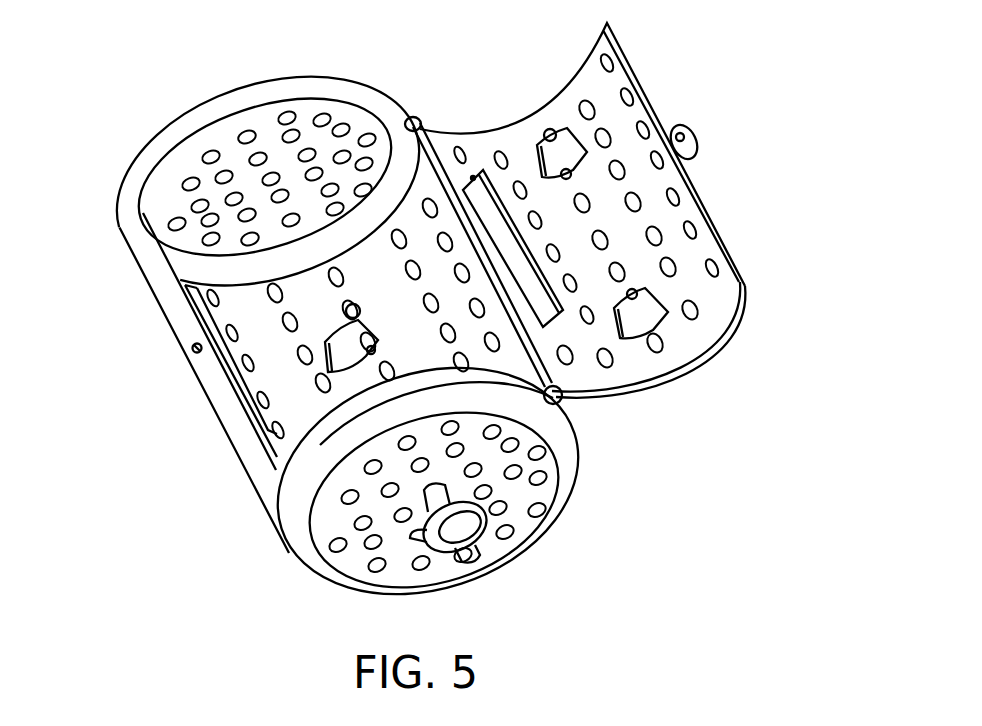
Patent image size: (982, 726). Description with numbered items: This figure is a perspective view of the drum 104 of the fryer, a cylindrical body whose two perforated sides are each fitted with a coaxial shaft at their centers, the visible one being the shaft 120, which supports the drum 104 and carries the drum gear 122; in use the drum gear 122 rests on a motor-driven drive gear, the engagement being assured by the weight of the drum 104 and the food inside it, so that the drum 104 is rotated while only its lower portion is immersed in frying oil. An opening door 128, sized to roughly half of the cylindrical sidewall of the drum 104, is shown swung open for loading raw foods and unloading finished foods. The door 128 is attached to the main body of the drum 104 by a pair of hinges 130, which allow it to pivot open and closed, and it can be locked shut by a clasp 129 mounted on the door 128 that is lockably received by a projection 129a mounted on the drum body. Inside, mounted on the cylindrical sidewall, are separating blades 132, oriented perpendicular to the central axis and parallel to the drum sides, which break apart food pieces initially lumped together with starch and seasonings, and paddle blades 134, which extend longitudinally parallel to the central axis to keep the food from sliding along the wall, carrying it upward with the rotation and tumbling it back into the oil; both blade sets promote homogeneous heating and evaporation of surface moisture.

The drum 104 is at (143, 245).
The shaft 120 is at (447, 495).
The drum gear 122 is at (448, 540).
The opening door 128 is at (703, 248).
The clasp 129 is at (687, 127).
The projection 129a is at (192, 350).
The hinges 130 is at (560, 400).
The separating blades 132 is at (557, 132).
The paddle blades 134 is at (473, 178).